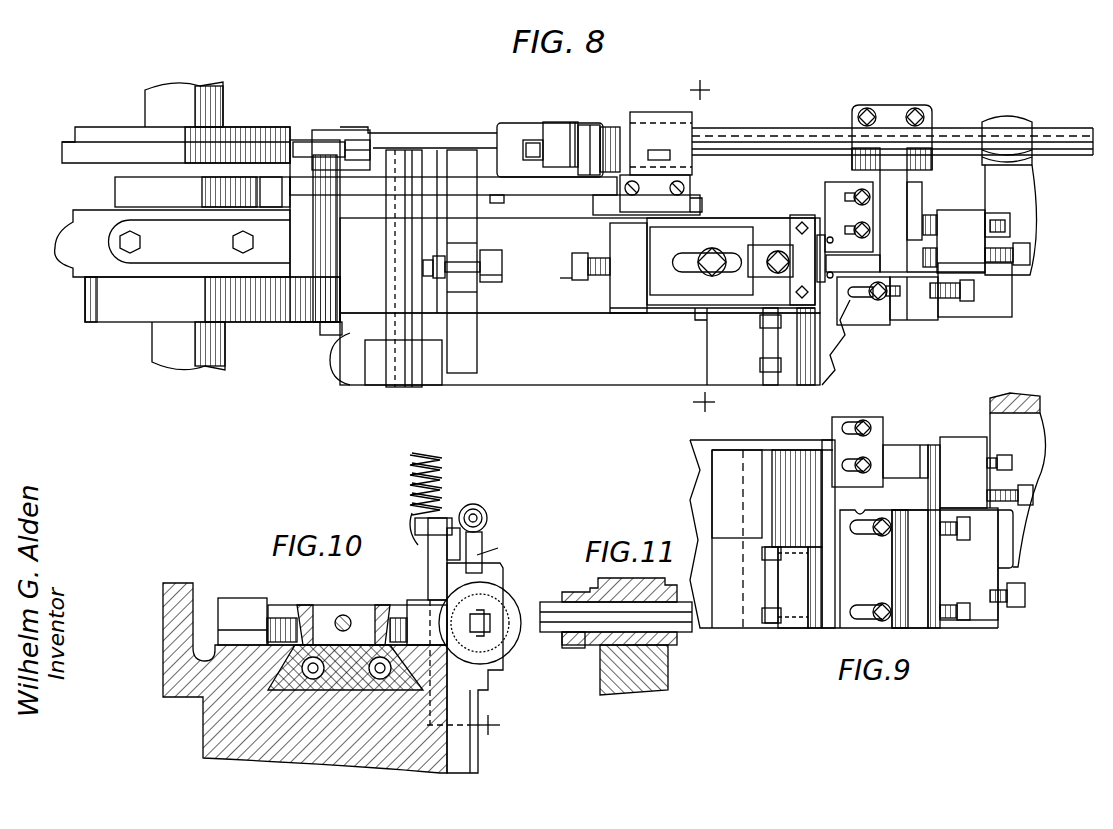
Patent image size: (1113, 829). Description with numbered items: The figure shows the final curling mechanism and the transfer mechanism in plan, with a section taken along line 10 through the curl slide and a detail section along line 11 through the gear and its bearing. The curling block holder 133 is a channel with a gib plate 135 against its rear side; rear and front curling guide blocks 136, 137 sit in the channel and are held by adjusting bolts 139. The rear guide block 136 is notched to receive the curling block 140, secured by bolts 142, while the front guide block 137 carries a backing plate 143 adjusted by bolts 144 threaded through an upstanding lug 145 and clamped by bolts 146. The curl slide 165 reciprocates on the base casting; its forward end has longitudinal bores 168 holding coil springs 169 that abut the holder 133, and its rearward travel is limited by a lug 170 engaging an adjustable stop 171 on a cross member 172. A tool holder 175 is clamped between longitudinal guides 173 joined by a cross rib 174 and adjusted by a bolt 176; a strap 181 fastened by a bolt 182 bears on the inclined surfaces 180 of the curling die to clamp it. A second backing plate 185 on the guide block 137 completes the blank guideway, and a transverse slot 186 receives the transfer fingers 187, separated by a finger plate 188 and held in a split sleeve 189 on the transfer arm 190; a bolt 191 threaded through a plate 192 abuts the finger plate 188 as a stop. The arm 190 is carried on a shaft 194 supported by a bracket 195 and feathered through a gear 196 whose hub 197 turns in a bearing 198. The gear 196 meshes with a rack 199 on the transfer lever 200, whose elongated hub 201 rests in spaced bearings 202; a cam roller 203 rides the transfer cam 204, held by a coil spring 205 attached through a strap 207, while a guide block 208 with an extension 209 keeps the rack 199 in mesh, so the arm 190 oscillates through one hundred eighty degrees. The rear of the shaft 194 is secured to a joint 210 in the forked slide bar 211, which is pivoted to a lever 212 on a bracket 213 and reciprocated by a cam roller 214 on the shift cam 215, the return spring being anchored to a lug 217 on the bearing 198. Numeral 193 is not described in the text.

In FIG. 8, the section line 10 is at (714, 246).
In FIG. 10, the section line 11 is at (475, 636).
In FIG. 9, the curling block holder 133 is at (983, 563).
In FIG. 9, the gib plate 135 is at (765, 453).
In FIG. 9, the rear curling guide block 136 is at (787, 623).
In FIG. 9, the front curling guide block 137 is at (918, 622).
In FIG. 9, the adjusting bolts 139 is at (1025, 594).
In FIG. 8, the curling block 140 is at (795, 352).
In FIG. 9, the curling block 140 is at (828, 630).
In FIG. 9, the bolts 142 is at (770, 620).
In FIG. 8, the backing plate 143 is at (876, 320).
In FIG. 9, the backing plate 143 is at (889, 569).
In FIG. 8, the bolts 144 is at (962, 300).
In FIG. 9, the bolts 144 is at (962, 612).
In FIG. 8, the upstanding lug 145 is at (920, 318).
In FIG. 9, the upstanding lug 145 is at (922, 577).
In FIG. 9, the bolts 146 is at (880, 605).
In FIG. 8, the curl slide 165 is at (545, 310).
In FIG. 10, the curl slide 165 is at (308, 613).
In FIG. 10, the longitudinal bores 168 is at (215, 758).
In FIG. 10, the coil springs 169 is at (300, 680).
In FIG. 8, the lug 170 is at (502, 262).
In FIG. 8, the adjustable stop 171 is at (478, 250).
In FIG. 8, the cross member 172 is at (462, 310).
In FIG. 8, the longitudinal guides 173 is at (715, 218).
In FIG. 8, the cross rib 174 is at (591, 257).
In FIG. 8, the tool holder 175 is at (760, 235).
In FIG. 8, the bolt 176 is at (570, 270).
In FIG. 8, the inclined surfaces 180 is at (827, 195).
In FIG. 8, the strap 181 is at (760, 268).
In FIG. 8, the bolt 182 is at (707, 255).
In FIG. 8, the second backing plate 185 is at (905, 178).
In FIG. 9, the second backing plate 185 is at (845, 418).
In FIG. 8, the transverse slot 186 is at (937, 272).
In FIG. 8, the transfer fingers 187 is at (872, 297).
In FIG. 8, the finger plate 188 is at (961, 241).
In FIG. 8, the split sleeve 189 is at (951, 241).
In FIG. 8, the transfer arm 190 is at (898, 205).
In FIG. 8, the bolt 191 is at (1030, 255).
In FIG. 9, the bolt 191 is at (1033, 495).
In FIG. 8, the plate 192 is at (992, 262).
In FIG. 9, the plate 192 is at (955, 455).
In FIG. 9, the block 193 is at (898, 445).
In FIG. 8, the shaft 194 is at (1056, 132).
In FIG. 11, the shaft 194 is at (550, 608).
In FIG. 8, the bracket 195 is at (1030, 210).
In FIG. 9, the bracket 195 is at (1038, 440).
In FIG. 8, the gear 196 is at (612, 127).
In FIG. 11, the gear 196 is at (572, 648).
In FIG. 11, the hub 197 is at (640, 580).
In FIG. 8, the bearing 198 is at (660, 112).
In FIG. 10, the bearing 198 is at (497, 582).
In FIG. 11, the bearing 198 is at (655, 665).
In FIG. 8, the rack 199 is at (597, 170).
In FIG. 10, the rack 199 is at (432, 580).
In FIG. 8, the transfer lever 200 is at (527, 186).
In FIG. 8, the elongated hub 201 is at (395, 318).
In FIG. 8, the bearings 202 is at (392, 150).
In FIG. 10, the bearings 202 is at (242, 605).
In FIG. 8, the cam roller 203 is at (227, 195).
In FIG. 8, the transfer cam 204 is at (115, 188).
In FIG. 10, the coil spring 205 is at (435, 470).
In FIG. 8, the strap 207 is at (495, 207).
In FIG. 10, the strap 207 is at (420, 548).
In FIG. 8, the guide block 208 is at (700, 184).
In FIG. 10, the guide block 208 is at (410, 600).
In FIG. 8, the extension 209 is at (595, 205).
In FIG. 8, the joint 210 is at (547, 138).
In FIG. 8, the slide bar 211 is at (455, 140).
In FIG. 8, the lever 212 is at (310, 128).
In FIG. 8, the bracket 213 is at (333, 255).
In FIG. 8, the cam roller 214 is at (352, 140).
In FIG. 8, the shift cam 215 is at (68, 150).
In FIG. 8, the lug 217 is at (665, 152).
In FIG. 10, the lug 217 is at (487, 530).